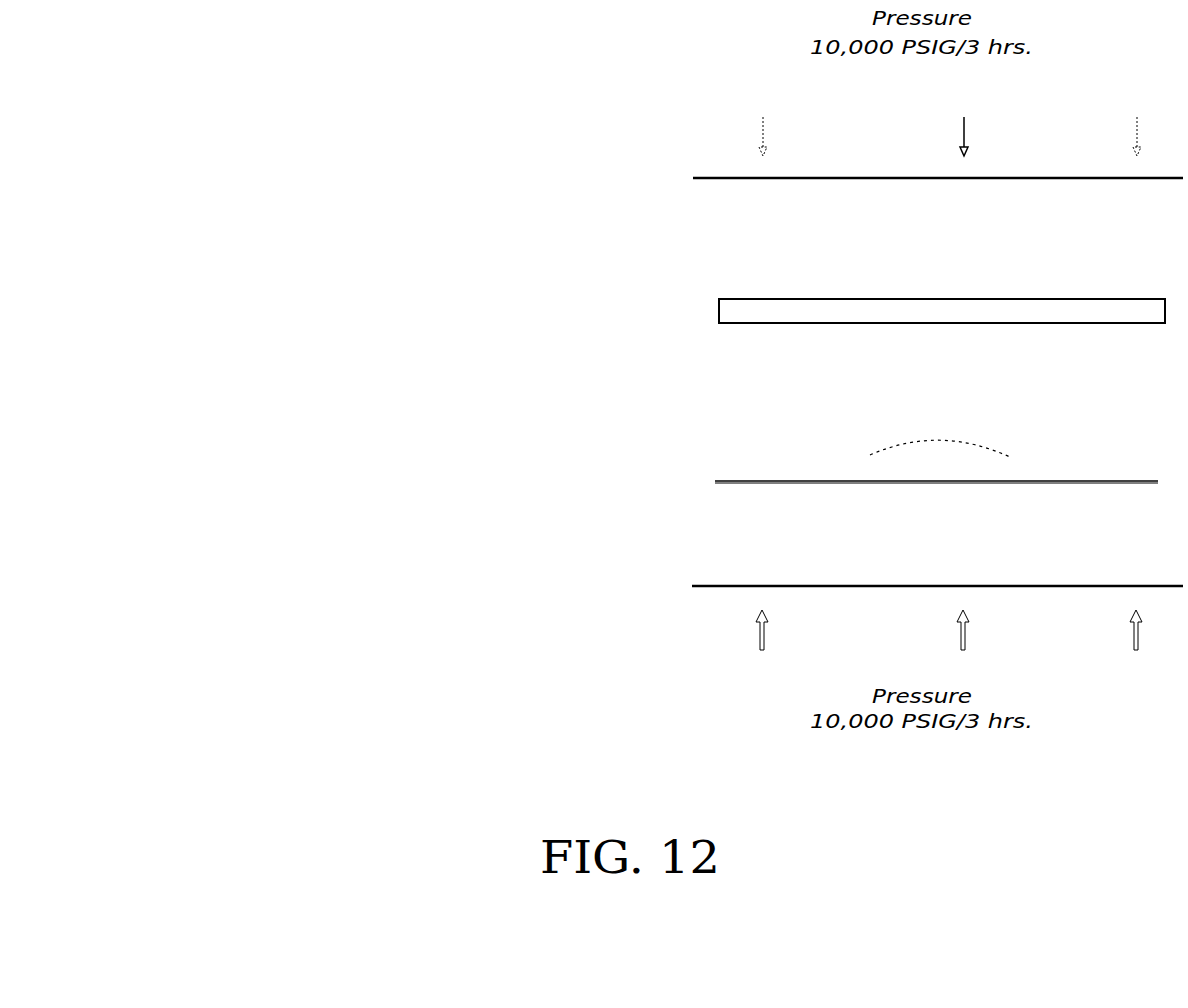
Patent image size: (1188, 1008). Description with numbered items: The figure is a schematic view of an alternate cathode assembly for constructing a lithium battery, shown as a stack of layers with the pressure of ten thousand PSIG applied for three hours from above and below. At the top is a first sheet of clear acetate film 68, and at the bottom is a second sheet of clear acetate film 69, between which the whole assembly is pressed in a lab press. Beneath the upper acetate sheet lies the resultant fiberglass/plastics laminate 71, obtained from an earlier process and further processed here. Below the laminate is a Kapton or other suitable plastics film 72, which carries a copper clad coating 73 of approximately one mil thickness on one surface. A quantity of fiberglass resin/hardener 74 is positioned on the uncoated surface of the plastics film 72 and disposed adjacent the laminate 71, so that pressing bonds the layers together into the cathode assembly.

The clear acetate film 68 is at (600, 177).
The fiberglass/plastics laminate 71 is at (660, 309).
The fiberglass resin/hardener 74 is at (884, 458).
The plastics film 72 is at (658, 476).
The copper clad coating 73 is at (772, 502).
The clear acetate film 69 is at (598, 583).